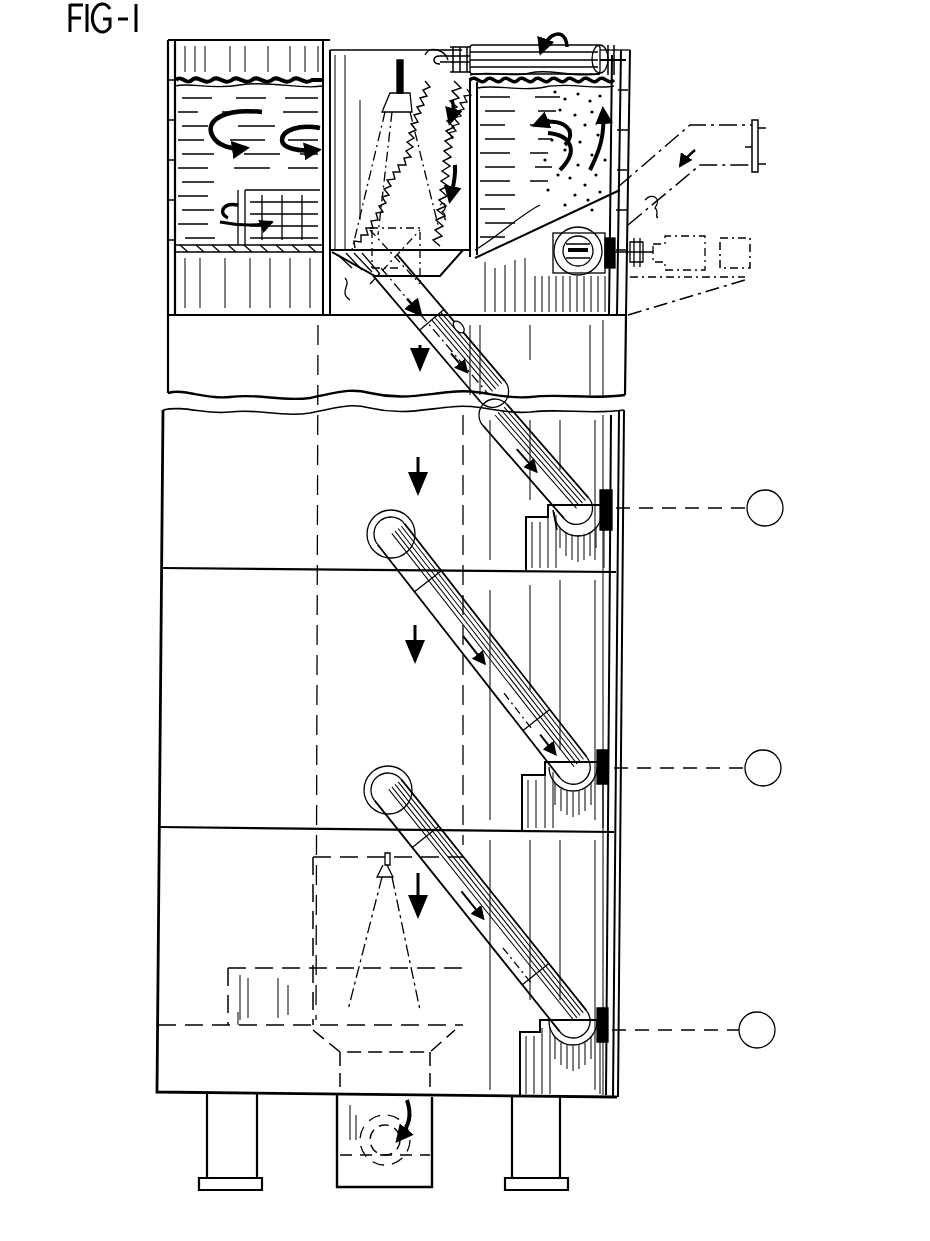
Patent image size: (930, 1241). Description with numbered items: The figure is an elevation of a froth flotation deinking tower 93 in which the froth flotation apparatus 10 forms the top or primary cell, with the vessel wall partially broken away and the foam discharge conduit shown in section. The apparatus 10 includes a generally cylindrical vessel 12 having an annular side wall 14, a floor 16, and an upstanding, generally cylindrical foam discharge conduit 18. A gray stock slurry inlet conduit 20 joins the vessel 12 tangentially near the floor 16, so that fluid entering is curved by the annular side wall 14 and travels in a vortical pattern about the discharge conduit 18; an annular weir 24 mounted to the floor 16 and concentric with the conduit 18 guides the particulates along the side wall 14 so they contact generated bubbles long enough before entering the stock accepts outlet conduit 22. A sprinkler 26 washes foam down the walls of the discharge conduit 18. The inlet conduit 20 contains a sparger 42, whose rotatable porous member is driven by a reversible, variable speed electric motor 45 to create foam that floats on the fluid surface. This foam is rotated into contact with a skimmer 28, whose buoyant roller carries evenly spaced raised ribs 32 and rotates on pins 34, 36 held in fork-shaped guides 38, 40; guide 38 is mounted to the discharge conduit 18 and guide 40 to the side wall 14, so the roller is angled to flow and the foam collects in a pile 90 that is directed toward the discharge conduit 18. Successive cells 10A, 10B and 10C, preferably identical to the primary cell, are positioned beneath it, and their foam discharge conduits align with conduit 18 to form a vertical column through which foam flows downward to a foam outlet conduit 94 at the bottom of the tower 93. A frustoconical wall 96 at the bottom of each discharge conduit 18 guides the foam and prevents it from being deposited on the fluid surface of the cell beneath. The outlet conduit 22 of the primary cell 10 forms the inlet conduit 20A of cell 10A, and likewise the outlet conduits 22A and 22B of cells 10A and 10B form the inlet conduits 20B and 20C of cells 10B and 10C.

The froth flotation apparatus 10 is at (150, 170).
The cell 10A is at (157, 512).
The cell 10B is at (152, 710).
The cell 10C is at (155, 930).
The vessel 12 is at (614, 90).
The annular side wall 14 is at (626, 130).
The floor 16 is at (262, 258).
The foam discharge conduit 18 is at (342, 92).
The inlet conduit 20 is at (656, 218).
The inlet conduit 20A is at (612, 528).
The inlet conduit 20B is at (598, 745).
The inlet conduit 20C is at (610, 1018).
The stock accepts outlet conduit 22 is at (395, 305).
The outlet conduit 22A is at (438, 548).
The outlet conduit 22B is at (438, 812).
The annular weir 24 is at (270, 232).
The sprinkler 26 is at (404, 68).
The skimmer 28 is at (592, 33).
The raised ribs 32 is at (545, 65).
The pin 34 is at (455, 58).
The pin 36 is at (612, 58).
The guide 38 is at (435, 70).
The guide 40 is at (624, 64).
The sparger 42 is at (633, 295).
The electric motor 45 is at (728, 243).
The pile 90 is at (507, 94).
The tower 93 is at (633, 498).
The foam outlet conduit 94 is at (428, 1128).
The frustoconical wall 96 is at (345, 296).